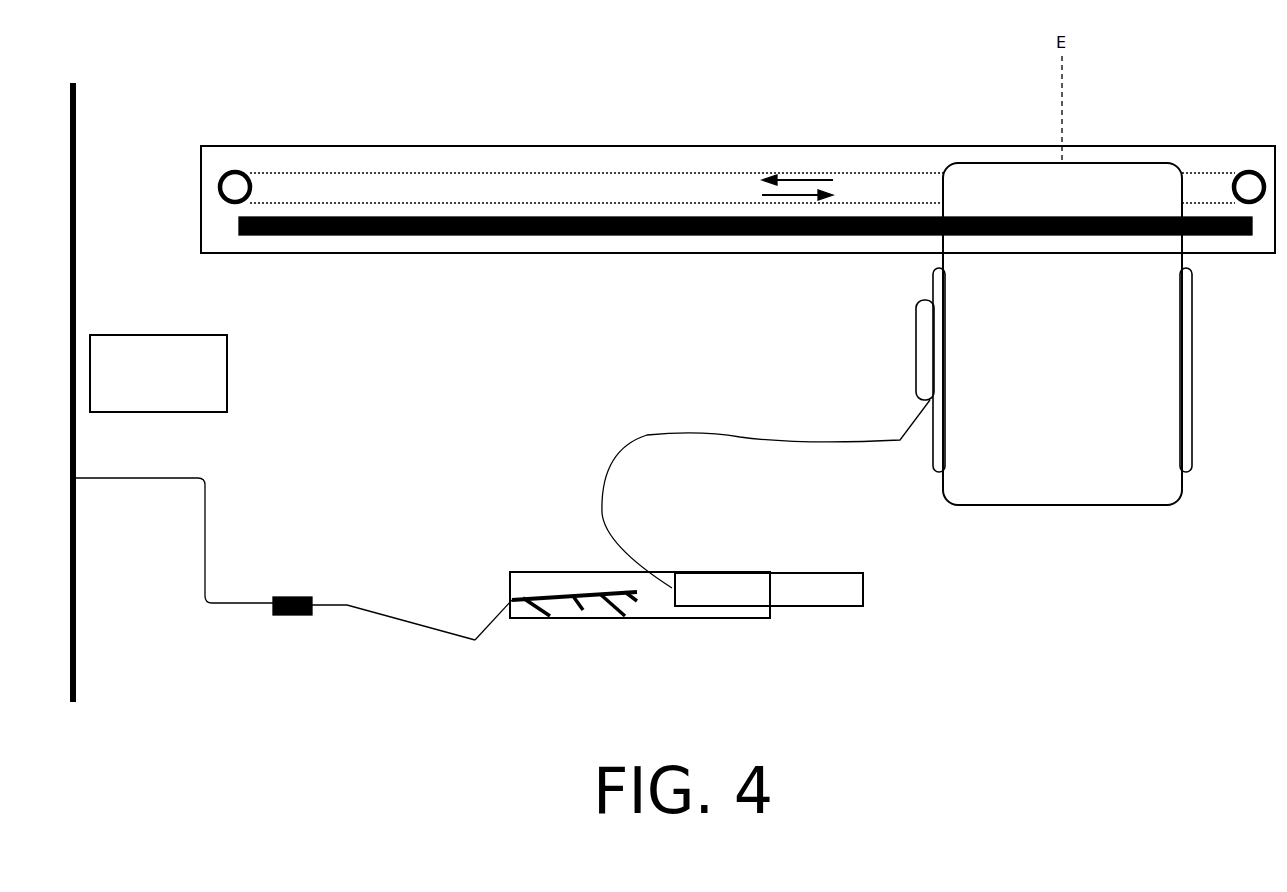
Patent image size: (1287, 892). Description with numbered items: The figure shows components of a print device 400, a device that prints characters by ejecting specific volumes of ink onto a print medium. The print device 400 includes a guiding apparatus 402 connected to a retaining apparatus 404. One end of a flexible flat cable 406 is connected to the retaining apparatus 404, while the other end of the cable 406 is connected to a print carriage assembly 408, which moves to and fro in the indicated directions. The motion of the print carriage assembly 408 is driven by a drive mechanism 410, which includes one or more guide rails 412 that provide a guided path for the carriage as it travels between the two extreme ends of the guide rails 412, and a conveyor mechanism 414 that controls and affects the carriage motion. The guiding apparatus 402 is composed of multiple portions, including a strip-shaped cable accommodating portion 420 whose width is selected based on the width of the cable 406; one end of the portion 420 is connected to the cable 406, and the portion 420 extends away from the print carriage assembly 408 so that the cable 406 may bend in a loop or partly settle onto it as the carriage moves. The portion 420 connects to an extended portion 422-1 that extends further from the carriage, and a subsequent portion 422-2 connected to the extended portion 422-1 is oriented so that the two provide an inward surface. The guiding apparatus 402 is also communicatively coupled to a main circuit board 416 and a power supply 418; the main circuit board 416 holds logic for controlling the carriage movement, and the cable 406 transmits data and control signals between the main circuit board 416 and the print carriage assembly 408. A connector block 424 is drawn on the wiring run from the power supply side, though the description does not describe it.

The print device 400 is at (733, 70).
The guiding apparatus 402 is at (490, 661).
The retaining apparatus 404 is at (864, 585).
The flexible flat cable 406 is at (628, 441).
The print carriage assembly 408 is at (1054, 334).
The drive mechanism 410 is at (378, 253).
The guide rails 412 is at (425, 235).
The conveyor mechanism 414 is at (248, 176).
The main circuit board 416 is at (76, 620).
The power supply 418 is at (158, 373).
The cable accommodating portion 420 is at (603, 615).
The extended portion 422-1 is at (498, 618).
The subsequent portion 422-2 is at (393, 620).
The connector block 424 is at (293, 597).